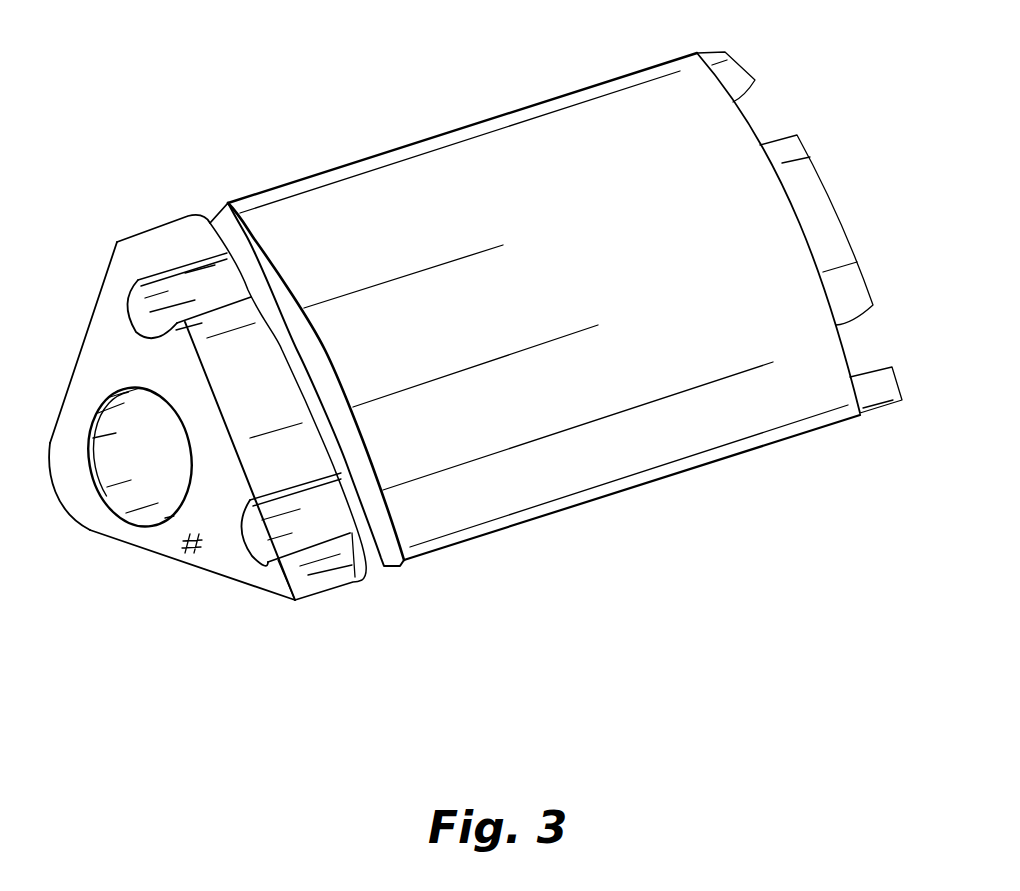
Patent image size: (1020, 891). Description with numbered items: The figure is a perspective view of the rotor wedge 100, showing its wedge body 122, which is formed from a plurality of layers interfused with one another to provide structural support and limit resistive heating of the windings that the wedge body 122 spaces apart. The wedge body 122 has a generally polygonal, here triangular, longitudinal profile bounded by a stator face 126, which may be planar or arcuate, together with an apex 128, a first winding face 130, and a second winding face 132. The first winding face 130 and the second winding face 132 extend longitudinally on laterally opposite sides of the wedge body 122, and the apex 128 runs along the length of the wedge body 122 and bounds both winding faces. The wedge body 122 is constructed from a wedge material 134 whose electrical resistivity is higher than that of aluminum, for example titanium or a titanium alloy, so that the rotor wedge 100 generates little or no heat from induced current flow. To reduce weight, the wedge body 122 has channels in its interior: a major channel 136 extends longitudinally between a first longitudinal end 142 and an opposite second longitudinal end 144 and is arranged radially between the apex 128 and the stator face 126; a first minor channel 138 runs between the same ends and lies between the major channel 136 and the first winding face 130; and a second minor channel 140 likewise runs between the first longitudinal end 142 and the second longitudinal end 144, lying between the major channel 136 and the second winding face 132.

The rotor wedge 100 is at (100, 54).
The wedge body 122 is at (447, 131).
The stator face 126 is at (640, 450).
The apex 128 is at (67, 515).
The first winding face 130 is at (67, 390).
The second winding face 132 is at (253, 587).
The wedge material 134 is at (180, 545).
The major channel 136 is at (154, 460).
The first minor channel 138 is at (187, 300).
The second minor channel 140 is at (312, 518).
The first longitudinal end 142 is at (103, 327).
The second longitudinal end 144 is at (839, 168).